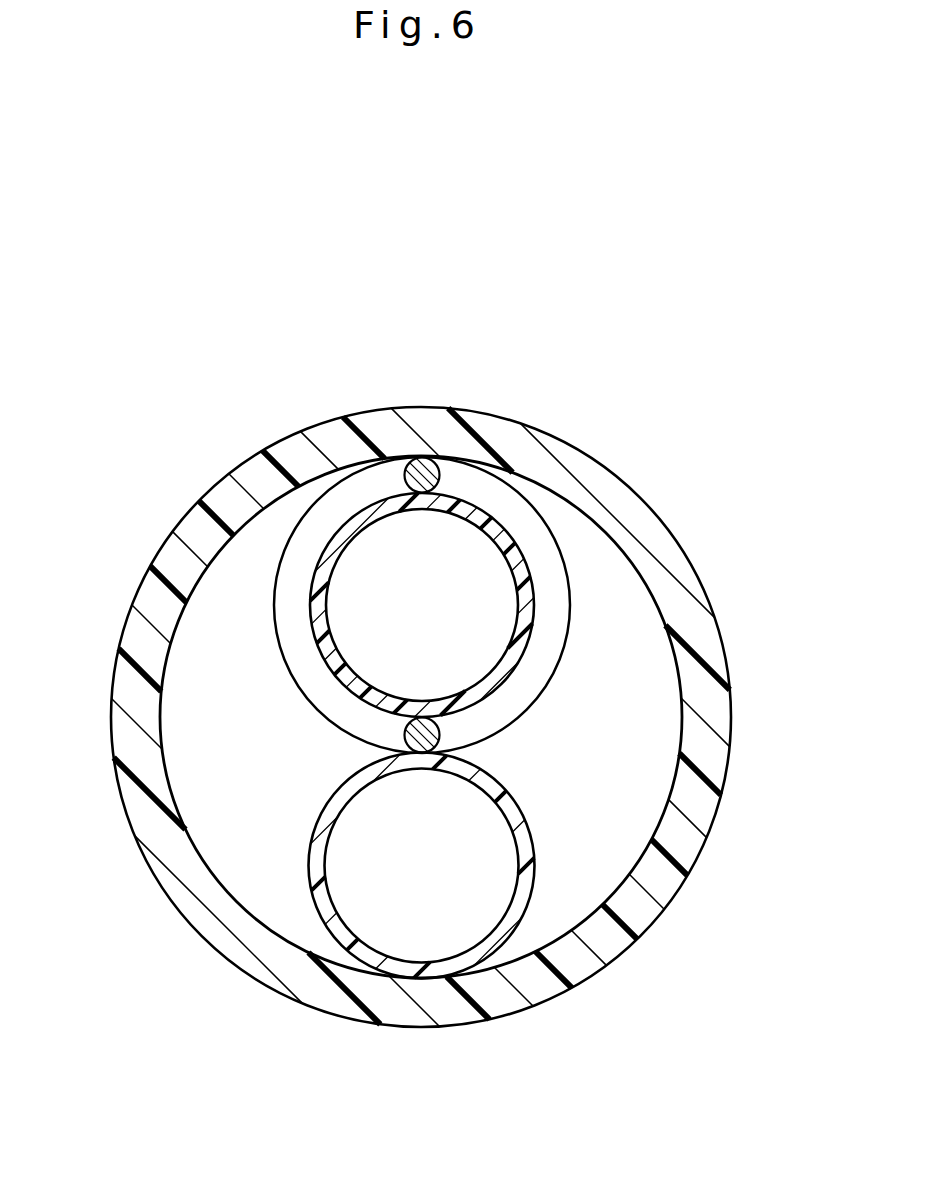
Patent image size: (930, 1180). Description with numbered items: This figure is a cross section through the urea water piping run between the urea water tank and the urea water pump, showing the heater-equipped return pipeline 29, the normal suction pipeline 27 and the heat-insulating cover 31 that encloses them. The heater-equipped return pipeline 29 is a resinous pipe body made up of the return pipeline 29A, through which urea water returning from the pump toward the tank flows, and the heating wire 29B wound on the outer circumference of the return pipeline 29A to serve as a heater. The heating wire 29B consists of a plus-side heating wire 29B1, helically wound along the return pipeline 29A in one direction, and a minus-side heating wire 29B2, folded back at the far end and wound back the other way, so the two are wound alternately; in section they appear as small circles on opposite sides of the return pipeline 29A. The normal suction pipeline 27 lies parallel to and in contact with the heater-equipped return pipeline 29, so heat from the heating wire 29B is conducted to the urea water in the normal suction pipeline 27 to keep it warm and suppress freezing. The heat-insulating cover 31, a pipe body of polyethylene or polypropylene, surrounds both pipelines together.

The normal suction pipeline 27 is at (530, 838).
The heater-equipped return pipeline 29 is at (469, 554).
The return pipeline 29A is at (497, 676).
The heating wire 29B is at (320, 680).
The plus-side heating wire 29B1 is at (421, 458).
The minus-side heating wire 29B2 is at (422, 737).
The heat-insulating cover 31 is at (395, 995).